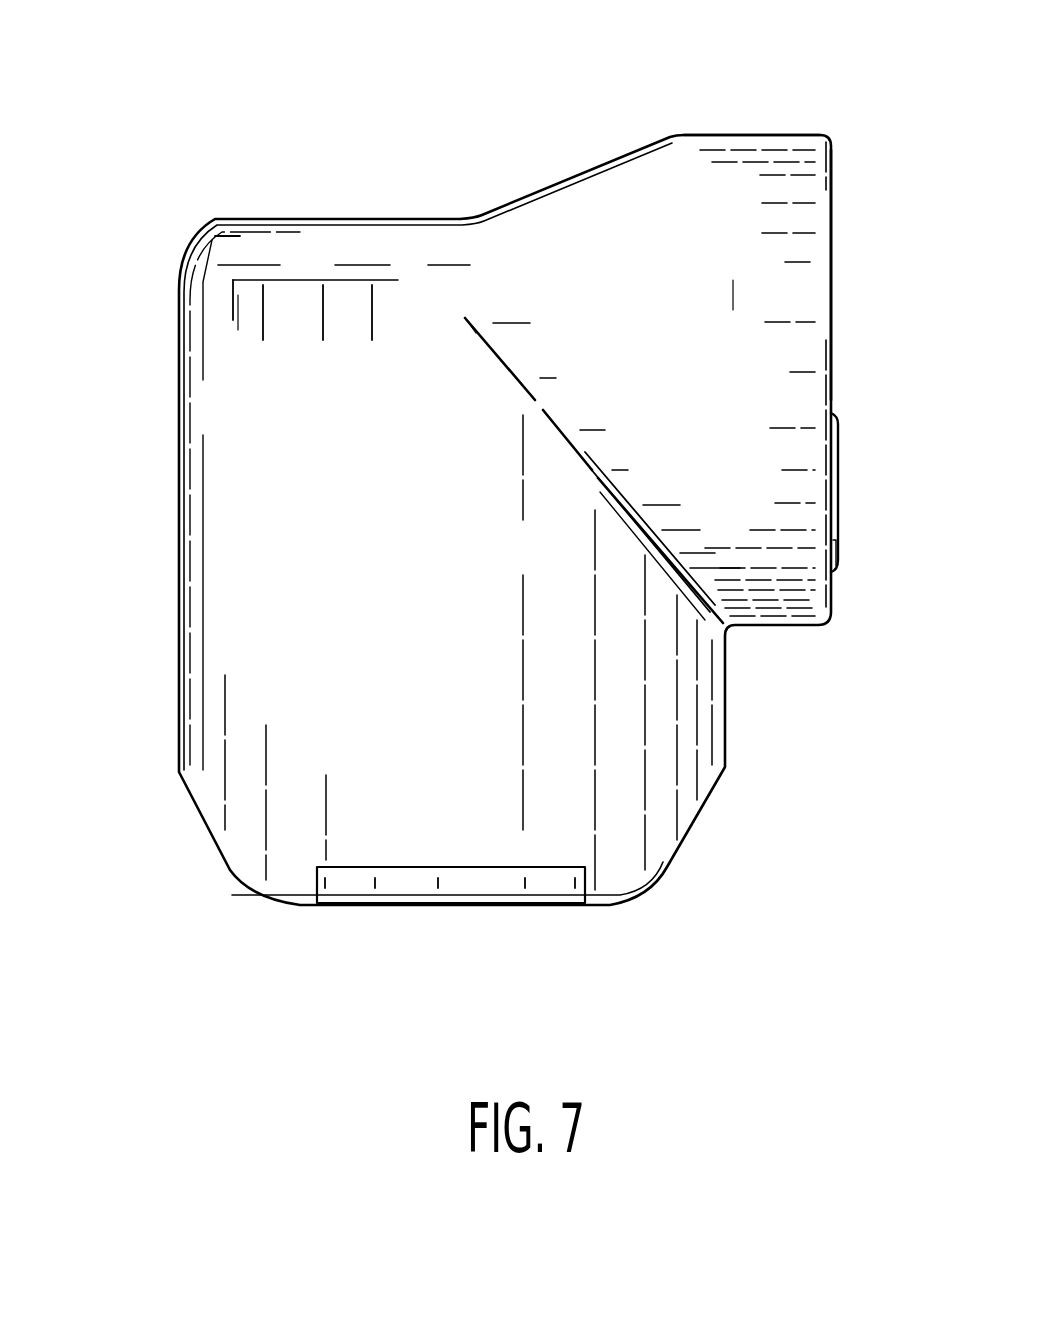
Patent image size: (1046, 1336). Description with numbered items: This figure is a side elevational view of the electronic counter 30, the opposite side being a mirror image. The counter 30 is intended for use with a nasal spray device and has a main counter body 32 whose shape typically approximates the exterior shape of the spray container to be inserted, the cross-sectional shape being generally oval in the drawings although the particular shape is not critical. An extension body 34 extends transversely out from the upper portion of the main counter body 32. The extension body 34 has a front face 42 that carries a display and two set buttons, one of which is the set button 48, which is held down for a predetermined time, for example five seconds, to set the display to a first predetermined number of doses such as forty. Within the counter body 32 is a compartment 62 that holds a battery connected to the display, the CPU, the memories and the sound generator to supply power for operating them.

The electronic counter 30 is at (148, 760).
The main counter body 32 is at (205, 592).
The extension body 34 is at (740, 168).
The front face 42 is at (832, 194).
The set button 48 is at (838, 472).
The compartment 62 is at (350, 880).